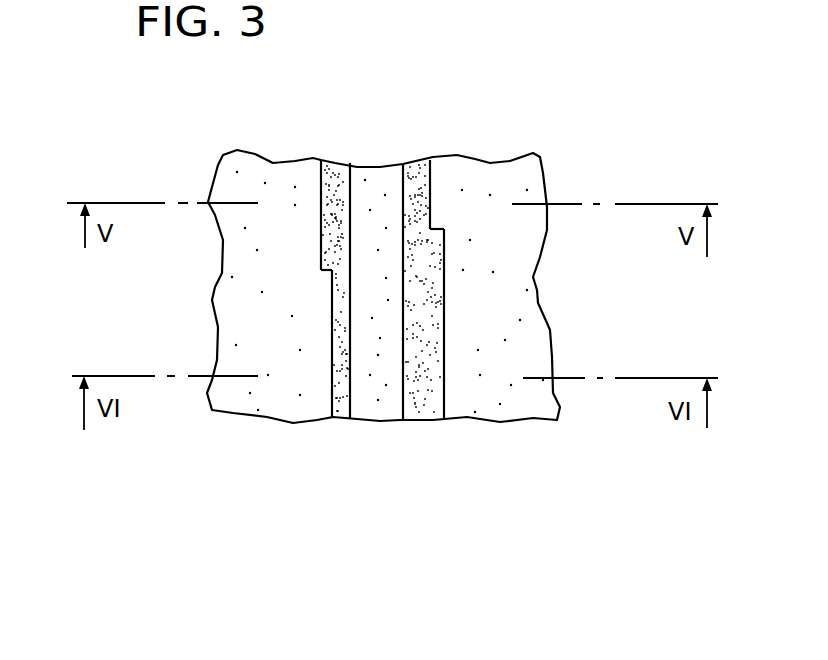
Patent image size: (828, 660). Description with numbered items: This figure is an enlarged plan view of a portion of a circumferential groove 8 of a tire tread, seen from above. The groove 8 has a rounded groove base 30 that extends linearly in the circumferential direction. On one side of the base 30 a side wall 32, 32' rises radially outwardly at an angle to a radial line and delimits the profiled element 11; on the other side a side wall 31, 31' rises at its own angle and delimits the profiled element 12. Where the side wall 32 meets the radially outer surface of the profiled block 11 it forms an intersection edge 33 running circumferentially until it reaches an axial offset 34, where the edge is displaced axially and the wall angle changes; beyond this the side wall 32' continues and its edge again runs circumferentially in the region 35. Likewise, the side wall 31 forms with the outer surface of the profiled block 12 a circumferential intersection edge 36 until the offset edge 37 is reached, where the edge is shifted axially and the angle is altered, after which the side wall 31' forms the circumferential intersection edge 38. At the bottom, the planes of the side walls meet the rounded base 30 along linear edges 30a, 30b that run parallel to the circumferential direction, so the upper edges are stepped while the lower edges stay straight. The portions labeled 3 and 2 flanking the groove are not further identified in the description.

The second member 2 is at (483, 149).
The first member 3 is at (235, 141).
The circumferential groove 8 is at (387, 419).
The profiled element 11 is at (232, 313).
The profiled element 12 is at (500, 400).
The groove base 30 is at (372, 182).
The linear edge 30a is at (332, 337).
The linear edge 30b is at (403, 303).
The side wall 31 is at (423, 153).
The side wall 31' is at (448, 356).
The side wall 32 is at (312, 175).
The side wall 32' is at (304, 344).
The intersection edge 33 is at (321, 222).
The axial offset 34 is at (321, 273).
The region of intersection edge 35 is at (330, 402).
The intersection edge 36 is at (430, 193).
The offset edge 37 is at (433, 222).
The intersection edge 38 is at (444, 350).